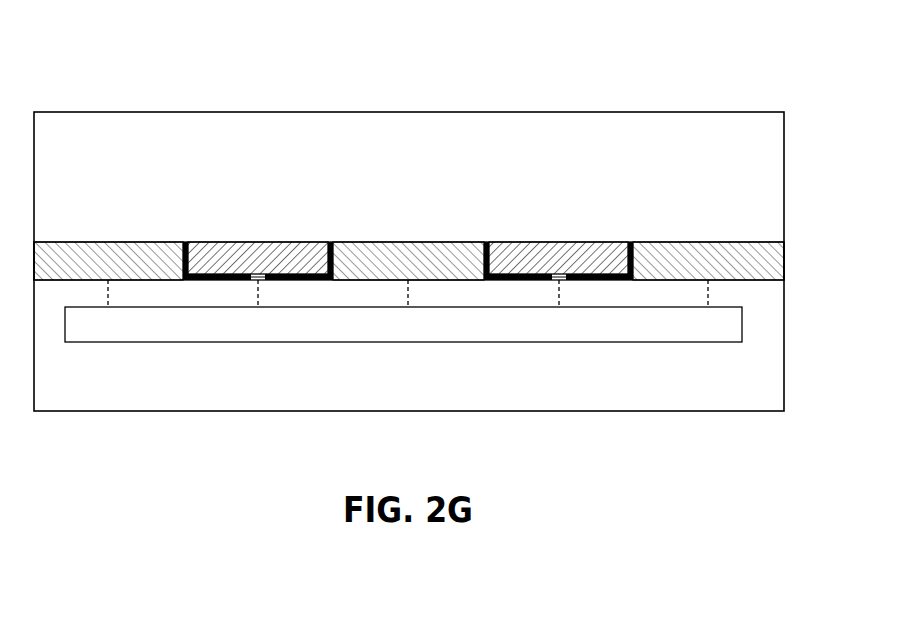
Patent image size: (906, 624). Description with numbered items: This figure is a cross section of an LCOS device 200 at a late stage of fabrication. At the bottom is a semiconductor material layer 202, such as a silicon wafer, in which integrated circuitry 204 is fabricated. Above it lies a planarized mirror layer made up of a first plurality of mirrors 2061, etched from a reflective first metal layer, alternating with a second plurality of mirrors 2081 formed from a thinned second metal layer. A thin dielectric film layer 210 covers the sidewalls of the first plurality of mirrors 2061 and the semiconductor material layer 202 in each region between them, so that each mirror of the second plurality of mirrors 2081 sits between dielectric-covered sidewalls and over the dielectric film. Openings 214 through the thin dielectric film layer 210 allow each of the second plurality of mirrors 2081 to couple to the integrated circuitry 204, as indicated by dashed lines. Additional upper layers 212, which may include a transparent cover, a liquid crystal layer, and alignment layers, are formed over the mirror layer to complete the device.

The LCOS device 200 is at (786, 22).
The semiconductor material layer 202 is at (752, 408).
The integrated circuitry 204 is at (710, 343).
The additional upper layers 212 is at (724, 112).
The first plurality of mirrors 2061 is at (112, 242).
The second plurality of mirrors 2081 is at (273, 242).
The thin dielectric film layer 210 is at (184, 242).
The openings 214 is at (253, 279).